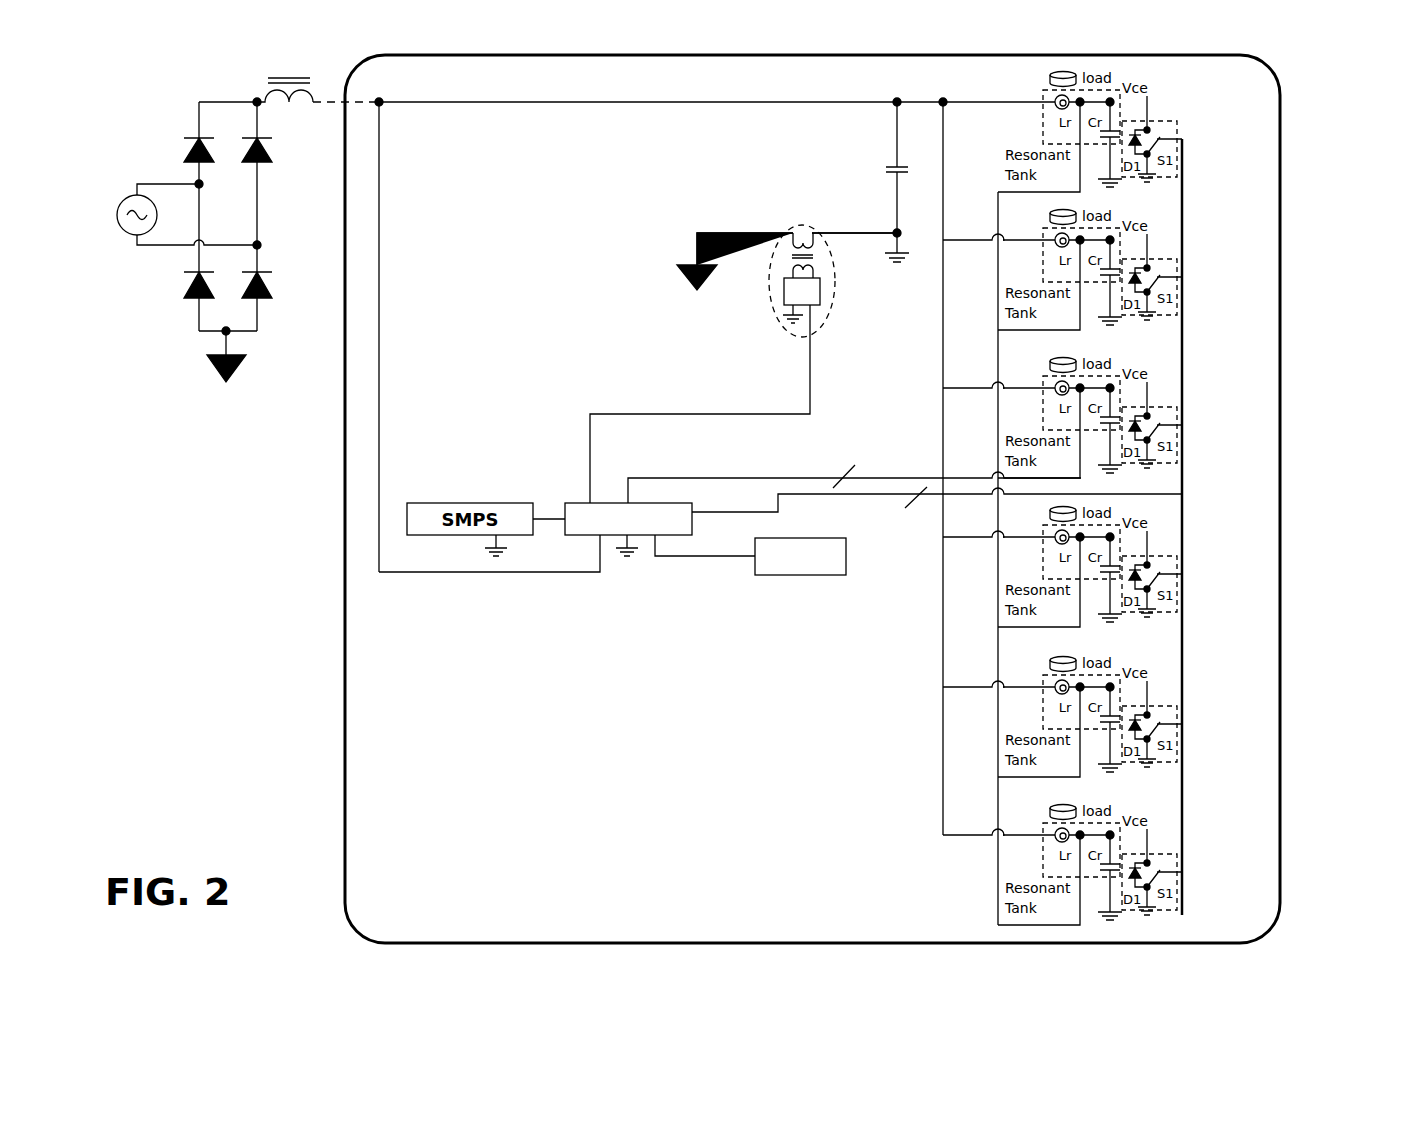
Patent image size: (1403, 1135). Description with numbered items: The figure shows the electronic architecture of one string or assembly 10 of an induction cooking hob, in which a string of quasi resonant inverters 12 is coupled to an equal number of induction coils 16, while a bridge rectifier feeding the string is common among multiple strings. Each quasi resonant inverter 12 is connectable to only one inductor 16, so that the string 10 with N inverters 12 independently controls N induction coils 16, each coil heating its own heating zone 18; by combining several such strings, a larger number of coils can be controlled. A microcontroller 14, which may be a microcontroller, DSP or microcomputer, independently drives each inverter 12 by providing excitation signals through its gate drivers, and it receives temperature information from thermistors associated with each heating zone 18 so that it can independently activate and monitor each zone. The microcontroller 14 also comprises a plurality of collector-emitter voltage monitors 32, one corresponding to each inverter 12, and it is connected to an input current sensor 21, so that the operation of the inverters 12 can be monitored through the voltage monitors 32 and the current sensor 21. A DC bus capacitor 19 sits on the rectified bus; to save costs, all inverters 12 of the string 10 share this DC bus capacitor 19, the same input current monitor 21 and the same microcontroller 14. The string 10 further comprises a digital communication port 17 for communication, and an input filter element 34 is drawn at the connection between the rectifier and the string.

The string or assembly 10 is at (1308, 68).
The quasi resonant inverter 12 is at (1125, 504).
The microcontroller 14 is at (650, 537).
The induction coil 16 is at (1062, 105).
The digital communication port 17 is at (770, 577).
The heating zone 18 is at (1198, 133).
The DC bus capacitor 19 is at (872, 168).
The input current sensor 21 is at (742, 318).
The Vce monitor 32 is at (822, 439).
The filter inductor 34 is at (376, 82).